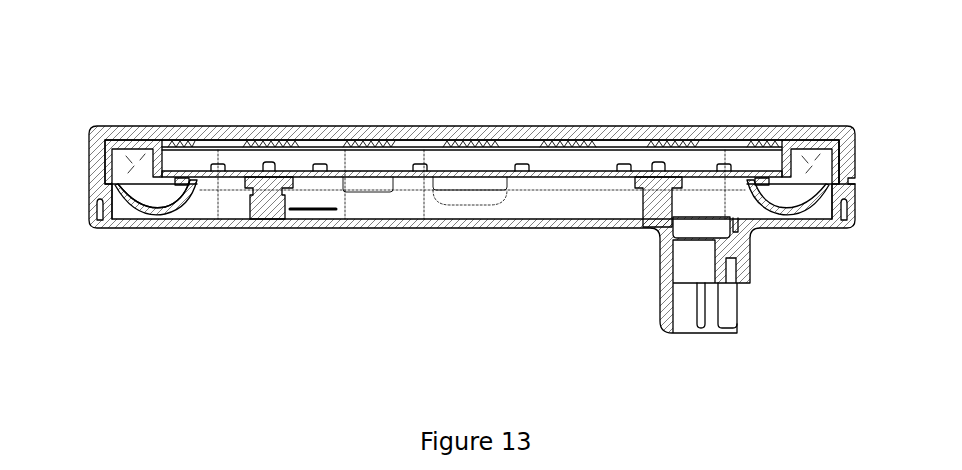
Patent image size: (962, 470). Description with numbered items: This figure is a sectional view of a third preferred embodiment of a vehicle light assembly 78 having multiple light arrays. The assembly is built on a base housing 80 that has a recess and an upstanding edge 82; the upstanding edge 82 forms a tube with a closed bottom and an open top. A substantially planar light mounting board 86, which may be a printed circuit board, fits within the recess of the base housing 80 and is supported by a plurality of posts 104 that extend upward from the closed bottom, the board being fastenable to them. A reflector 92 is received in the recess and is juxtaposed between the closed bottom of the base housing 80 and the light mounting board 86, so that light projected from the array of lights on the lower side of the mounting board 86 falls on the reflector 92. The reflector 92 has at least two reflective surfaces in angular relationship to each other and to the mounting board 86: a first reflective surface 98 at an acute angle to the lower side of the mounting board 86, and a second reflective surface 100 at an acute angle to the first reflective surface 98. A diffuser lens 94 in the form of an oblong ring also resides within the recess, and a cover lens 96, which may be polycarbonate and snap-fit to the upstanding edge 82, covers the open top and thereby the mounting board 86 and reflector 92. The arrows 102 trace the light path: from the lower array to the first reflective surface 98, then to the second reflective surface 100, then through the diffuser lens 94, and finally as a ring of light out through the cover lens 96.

The vehicle light assembly 78 is at (563, 284).
The base housing 80 is at (222, 228).
The upstanding edge 82 is at (855, 188).
The light mounting board 86 is at (355, 171).
The reflector 92 is at (169, 216).
The diffuser lens 94 is at (139, 141).
The cover lens 96 is at (588, 130).
The first reflective surface 98 is at (181, 207).
The second reflective surface 100 is at (147, 205).
The arrows 102 is at (133, 172).
The posts 104 is at (336, 209).